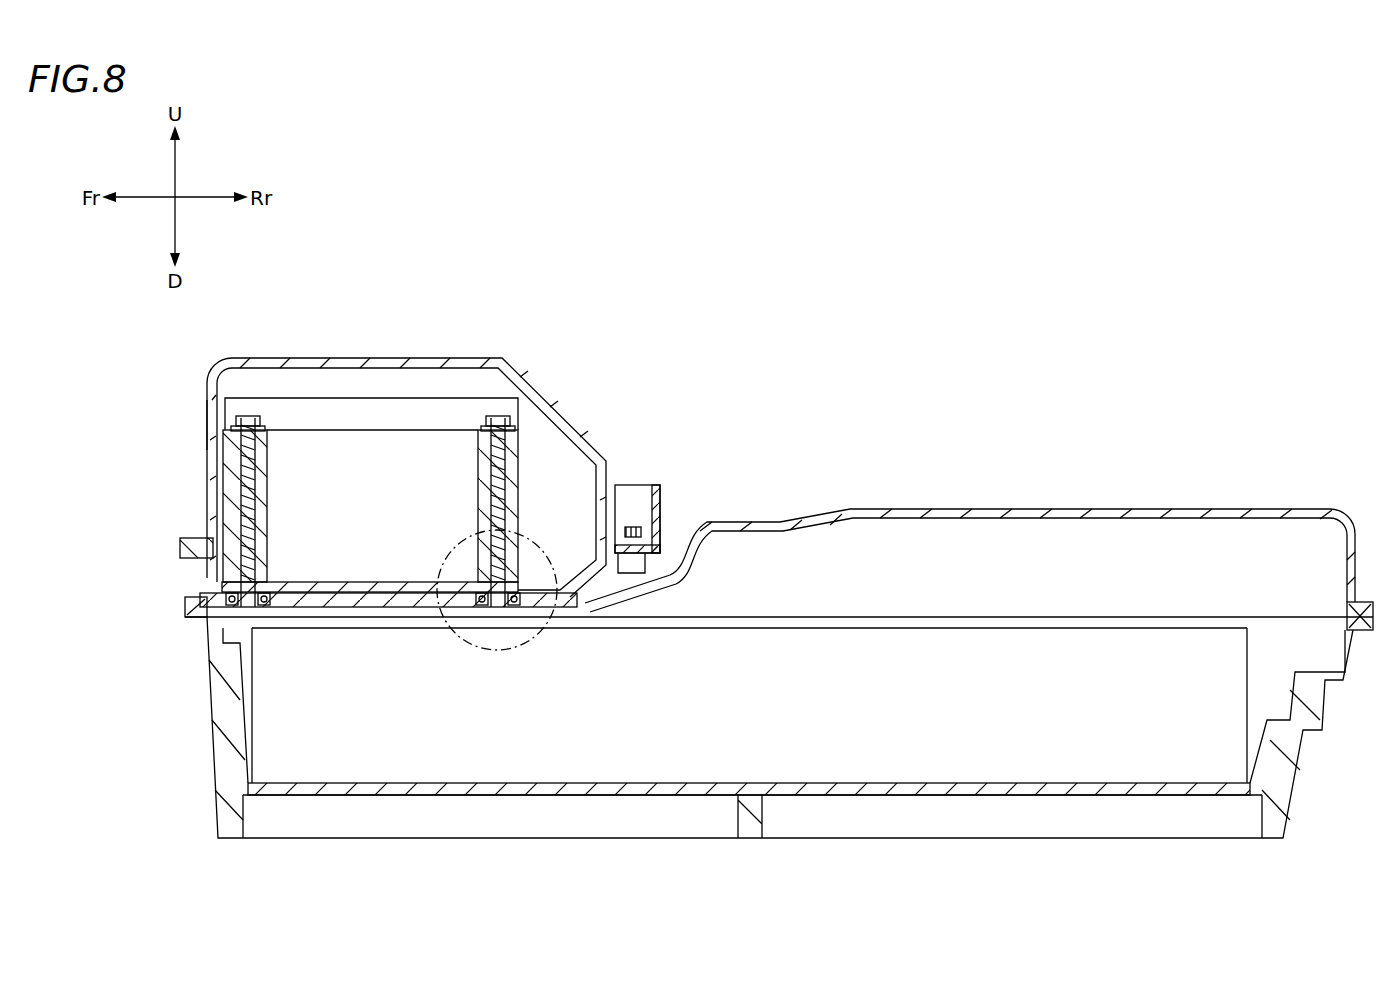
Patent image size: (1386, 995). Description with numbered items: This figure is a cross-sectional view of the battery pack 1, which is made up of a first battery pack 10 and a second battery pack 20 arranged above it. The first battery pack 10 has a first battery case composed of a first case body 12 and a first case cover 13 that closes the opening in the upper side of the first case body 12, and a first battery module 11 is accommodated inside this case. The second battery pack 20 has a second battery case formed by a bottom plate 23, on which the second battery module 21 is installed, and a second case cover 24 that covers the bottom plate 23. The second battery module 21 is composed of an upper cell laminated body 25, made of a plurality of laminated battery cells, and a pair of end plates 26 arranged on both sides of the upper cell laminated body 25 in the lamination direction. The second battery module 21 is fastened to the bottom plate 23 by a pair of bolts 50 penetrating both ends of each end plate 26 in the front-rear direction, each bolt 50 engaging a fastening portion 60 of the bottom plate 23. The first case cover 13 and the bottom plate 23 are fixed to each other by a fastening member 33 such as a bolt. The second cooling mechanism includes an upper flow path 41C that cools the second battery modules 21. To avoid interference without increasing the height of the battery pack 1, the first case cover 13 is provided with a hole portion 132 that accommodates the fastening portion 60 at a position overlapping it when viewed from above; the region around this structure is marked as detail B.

The battery pack 1 is at (988, 278).
The first battery pack 10 is at (1240, 506).
The first battery module 11 is at (1010, 622).
The first case body 12 is at (226, 710).
The first case cover 13 is at (190, 610).
The second battery pack 20 is at (497, 356).
The second battery module 21 is at (392, 394).
The bottom plate 23 is at (210, 576).
The second case cover 24 is at (206, 424).
The upper cell laminated body 25 is at (352, 415).
The end plate 26 is at (325, 470).
The fastening member 33 is at (632, 524).
The upper flow path 41C is at (392, 610).
The bolt 50 is at (237, 414).
The fastening portion 60 is at (300, 582).
The hole portion 132 is at (262, 610).
The detail region B is at (527, 540).